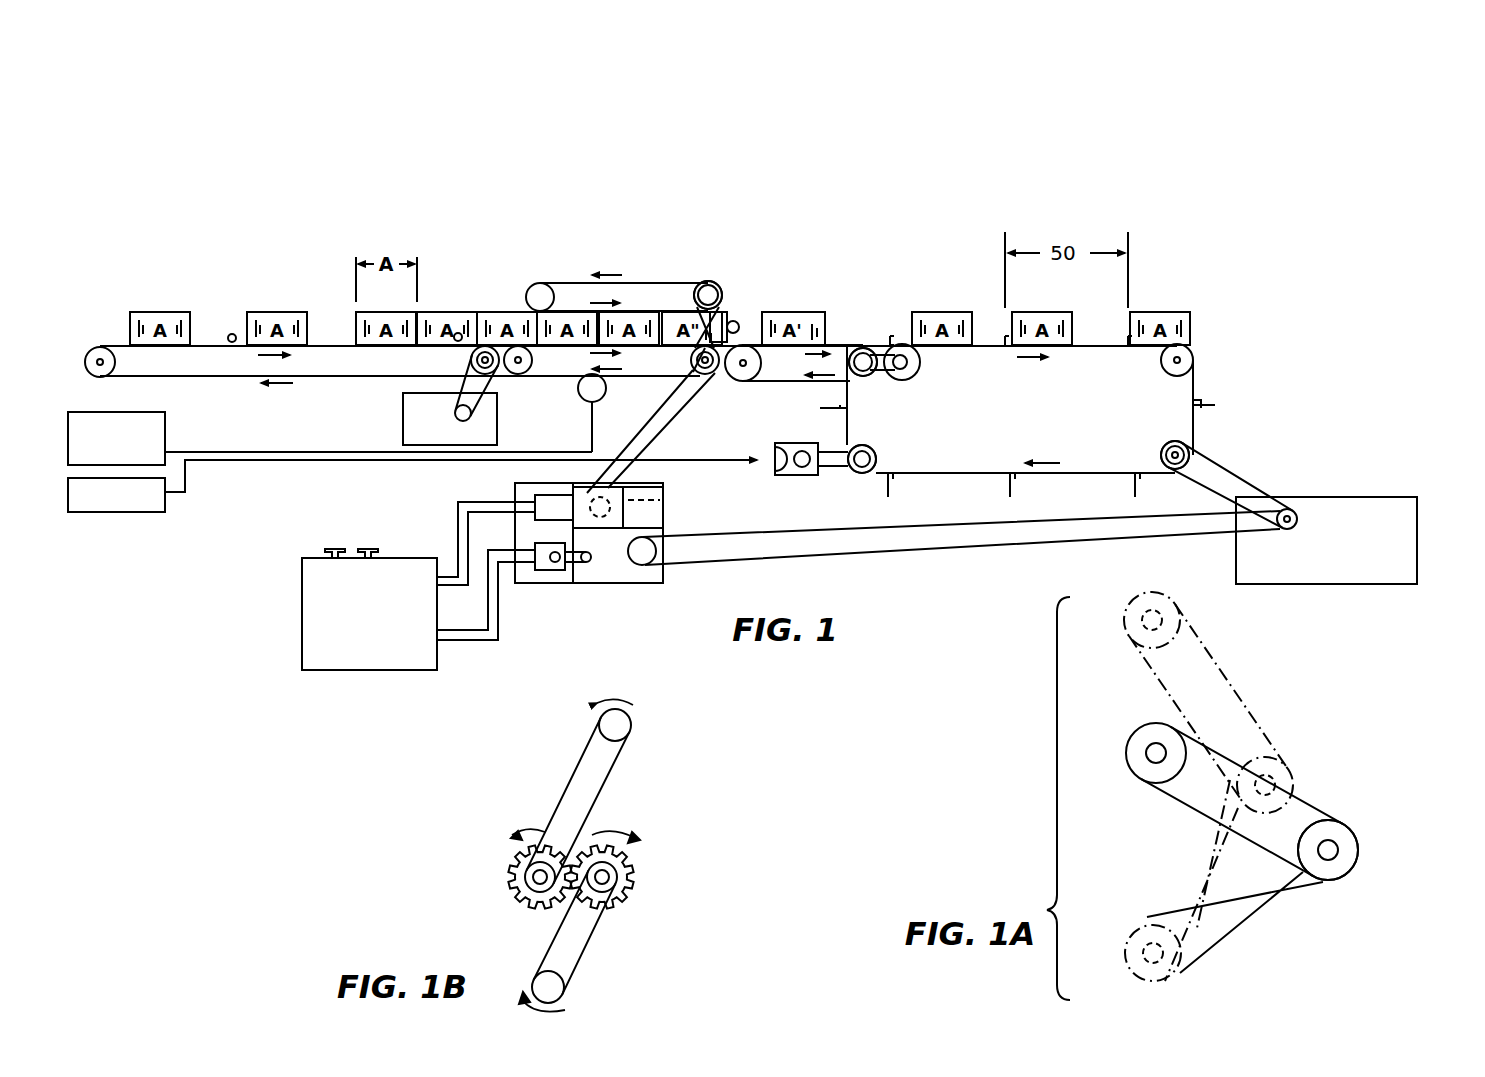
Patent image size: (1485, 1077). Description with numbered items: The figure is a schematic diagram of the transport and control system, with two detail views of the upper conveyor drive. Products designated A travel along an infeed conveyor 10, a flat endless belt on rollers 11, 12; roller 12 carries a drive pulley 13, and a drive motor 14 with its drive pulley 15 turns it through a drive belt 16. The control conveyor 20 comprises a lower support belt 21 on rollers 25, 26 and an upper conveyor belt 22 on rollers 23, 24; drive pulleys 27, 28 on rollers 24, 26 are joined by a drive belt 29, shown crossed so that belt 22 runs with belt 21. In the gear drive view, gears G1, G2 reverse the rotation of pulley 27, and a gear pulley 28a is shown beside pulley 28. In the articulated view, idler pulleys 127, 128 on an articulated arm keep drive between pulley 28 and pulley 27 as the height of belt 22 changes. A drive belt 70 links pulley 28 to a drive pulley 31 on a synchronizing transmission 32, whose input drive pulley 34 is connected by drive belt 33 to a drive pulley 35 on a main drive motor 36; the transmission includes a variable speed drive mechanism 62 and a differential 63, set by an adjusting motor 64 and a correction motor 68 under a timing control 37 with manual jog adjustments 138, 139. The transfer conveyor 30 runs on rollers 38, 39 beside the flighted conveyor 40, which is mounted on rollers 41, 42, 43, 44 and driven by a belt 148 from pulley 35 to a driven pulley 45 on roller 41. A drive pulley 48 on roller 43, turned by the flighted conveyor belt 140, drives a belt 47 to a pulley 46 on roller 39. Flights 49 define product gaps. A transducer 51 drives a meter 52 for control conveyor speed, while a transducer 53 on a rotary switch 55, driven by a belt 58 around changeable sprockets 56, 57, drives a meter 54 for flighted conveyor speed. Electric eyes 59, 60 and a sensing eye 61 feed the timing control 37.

In FIG. 1, the infeed conveyor 10 is at (203, 346).
In FIG. 1, the roller 11 is at (108, 348).
In FIG. 1, the roller 12 is at (471, 358).
In FIG. 1, the drive pulley 13 is at (496, 376).
In FIG. 1, the drive motor 14 is at (403, 428).
In FIG. 1, the drive pulley 15 is at (471, 416).
In FIG. 1, the drive belt 16 is at (470, 392).
In FIG. 1, the control conveyor 20 is at (645, 273).
In FIG. 1, the lower support belt 21 is at (565, 340).
In FIG. 1, the upper conveyor belt 22 is at (566, 283).
In FIG. 1, the roller 23 is at (533, 290).
In FIG. 1, the roller 24 is at (707, 281).
In FIG. 1, the roller 25 is at (530, 370).
In FIG. 1, the roller 26 is at (710, 376).
In FIG. 1, the drive pulley 27 is at (722, 295).
In FIG. 1B, the drive pulley 27 is at (634, 722).
In FIG. 1A, the drive pulley 27 is at (1182, 608).
In FIG. 1, the drive pulley 28 is at (691, 360).
In FIG. 1B, the drive pulley 28 is at (630, 872).
In FIG. 1A, the drive pulley 28 is at (1178, 972).
In FIG. 1B, the gear pulley 28a is at (522, 857).
In FIG. 1, the drive belt 29 is at (715, 322).
In FIG. 1B, the drive belt 29 is at (606, 785).
In FIG. 1A, the drive belt 29 is at (1225, 758).
In FIG. 1, the transfer conveyor 30 is at (803, 384).
In FIG. 1, the drive pulley 31 is at (665, 491).
In FIG. 1B, the drive pulley 31 is at (565, 992).
In FIG. 1, the synchronizing transmission 32 is at (665, 513).
In FIG. 1, the drive belt 33 is at (940, 549).
In FIG. 1, the drive pulley 34 is at (645, 566).
In FIG. 1, the drive pulley 35 is at (1295, 512).
In FIG. 1, the main drive motor 36 is at (1352, 526).
In FIG. 1, the timing control 37 is at (302, 618).
In FIG. 1, the roller 38 is at (762, 363).
In FIG. 1, the roller 39 is at (920, 362).
In FIG. 1, the flighted conveyor 40 is at (931, 436).
In FIG. 1, the roller 41 is at (1165, 444).
In FIG. 1, the roller 42 is at (865, 474).
In FIG. 1, the roller 43 is at (860, 376).
In FIG. 1, the roller 44 is at (1163, 371).
In FIG. 1, the driven pulley 45 is at (1161, 455).
In FIG. 1, the pulley 46 is at (916, 375).
In FIG. 1, the belt 47 is at (880, 374).
In FIG. 1, the drive pulley 48 is at (858, 350).
In FIG. 1, the flights 49 is at (890, 338).
In FIG. 1, the transducer 51 is at (606, 389).
In FIG. 1, the meter 52 is at (165, 430).
In FIG. 1, the transducer 53 is at (772, 450).
In FIG. 1, the meter 54 is at (160, 512).
In FIG. 1, the rotary switch 55 is at (778, 474).
In FIG. 1, the changeable sprocket 56 is at (877, 459).
In FIG. 1, the changeable sprocket 57 is at (802, 468).
In FIG. 1, the belt 58 is at (838, 468).
In FIG. 1, the electric eye 59 is at (232, 334).
In FIG. 1, the electric eye 60 is at (458, 333).
In FIG. 1, the electric eye 61 is at (739, 326).
In FIG. 1, the variable speed drive mechanism 62 is at (600, 583).
In FIG. 1, the differential 63 is at (592, 483).
In FIG. 1, the adjusting motor 64 is at (550, 571).
In FIG. 1, the correction motor 68 is at (545, 503).
In FIG. 1, the drive belt 70 is at (665, 441).
In FIG. 1B, the drive belt 70 is at (594, 939).
In FIG. 1A, the idler pulley 127 is at (1295, 782).
In FIG. 1A, the idler pulley 128 is at (1328, 850).
In FIG. 1, the manual jog adjustment 138 is at (332, 548).
In FIG. 1, the manual jog adjustment 139 is at (368, 548).
In FIG. 1, the flighted conveyor belt 140 is at (948, 473).
In FIG. 1, the belt 148 is at (1230, 470).
In FIG. 1B, the gear G1 is at (634, 891).
In FIG. 1B, the gear G2 is at (510, 883).